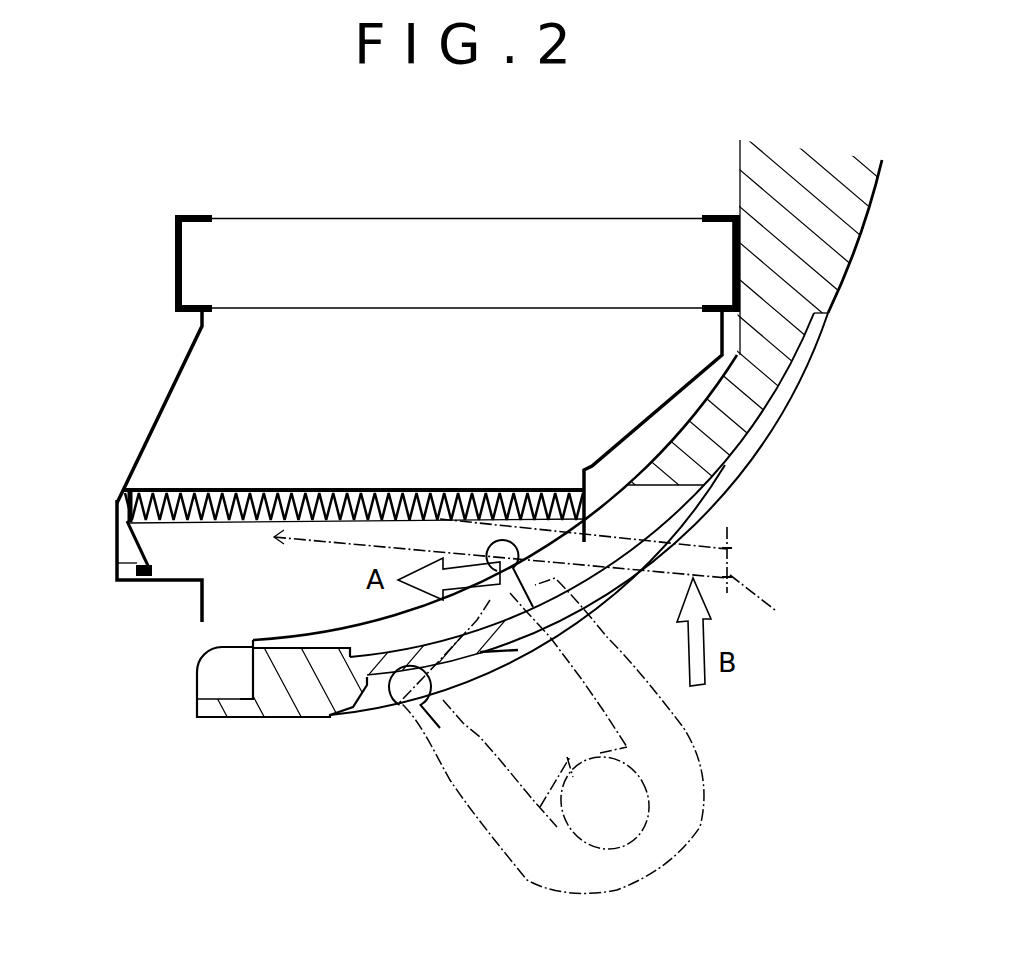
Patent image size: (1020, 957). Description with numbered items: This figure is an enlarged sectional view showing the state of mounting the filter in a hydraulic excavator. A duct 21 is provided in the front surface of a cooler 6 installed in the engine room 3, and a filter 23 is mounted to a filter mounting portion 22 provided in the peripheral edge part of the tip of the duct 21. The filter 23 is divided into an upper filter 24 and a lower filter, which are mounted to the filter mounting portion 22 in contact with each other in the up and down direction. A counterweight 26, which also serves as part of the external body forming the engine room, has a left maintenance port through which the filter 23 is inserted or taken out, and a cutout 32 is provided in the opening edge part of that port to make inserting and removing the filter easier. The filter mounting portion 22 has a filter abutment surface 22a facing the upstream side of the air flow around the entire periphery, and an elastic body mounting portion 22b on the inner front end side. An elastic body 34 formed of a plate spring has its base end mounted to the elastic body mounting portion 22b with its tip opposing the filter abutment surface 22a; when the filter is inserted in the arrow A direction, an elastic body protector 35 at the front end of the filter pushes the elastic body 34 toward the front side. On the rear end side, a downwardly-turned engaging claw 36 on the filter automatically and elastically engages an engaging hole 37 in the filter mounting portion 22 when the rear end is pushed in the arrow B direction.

The engine room 3 is at (430, 189).
The cooler 6 is at (449, 290).
The duct 21 is at (162, 397).
The filter mounting portion 22 is at (116, 538).
The filter abutment surface 22a is at (166, 490).
The elastic body mounting portion 22b is at (152, 582).
The filter 23 is at (384, 491).
The upper filter 24 is at (440, 546).
The counterweight 26 is at (853, 262).
The cutout 32 is at (655, 507).
The elastic body 34 is at (117, 540).
The elastic body protector 35 is at (135, 525).
The engaging claw 36 is at (596, 505).
The engaging hole 37 is at (592, 503).